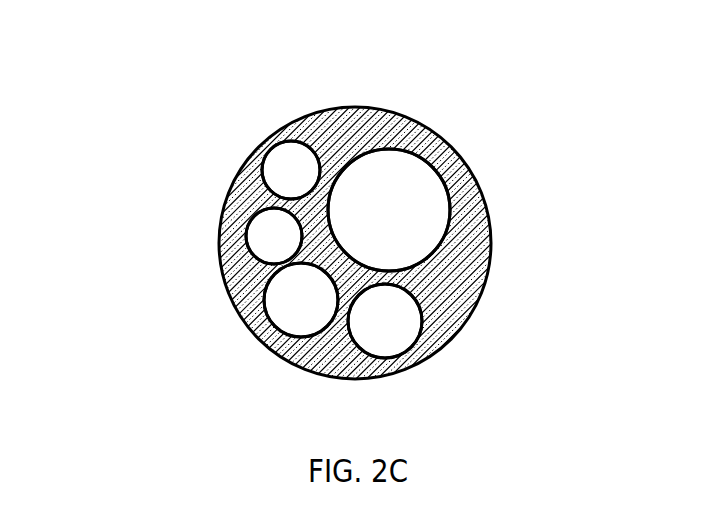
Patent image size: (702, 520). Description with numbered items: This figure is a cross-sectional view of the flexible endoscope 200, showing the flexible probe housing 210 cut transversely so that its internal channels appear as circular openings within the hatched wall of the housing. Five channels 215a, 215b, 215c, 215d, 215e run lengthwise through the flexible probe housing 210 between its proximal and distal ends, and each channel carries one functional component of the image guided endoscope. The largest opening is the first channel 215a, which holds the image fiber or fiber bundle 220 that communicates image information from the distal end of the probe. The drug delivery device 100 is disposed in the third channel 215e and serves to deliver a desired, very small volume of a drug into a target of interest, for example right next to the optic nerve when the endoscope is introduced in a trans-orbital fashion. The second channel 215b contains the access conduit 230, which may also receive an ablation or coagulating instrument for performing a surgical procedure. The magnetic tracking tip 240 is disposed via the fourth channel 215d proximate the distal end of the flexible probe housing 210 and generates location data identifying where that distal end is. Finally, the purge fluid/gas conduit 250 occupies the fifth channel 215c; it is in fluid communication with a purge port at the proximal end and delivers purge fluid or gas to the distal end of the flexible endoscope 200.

The flexible endoscope 200 is at (367, 32).
The flexible probe housing 210 is at (320, 108).
The drug delivery device 100 is at (290, 170).
The image fiber or fiber bundle 220 is at (405, 177).
The access conduit 230 is at (390, 342).
The magnetic tracking tip 240 is at (265, 297).
The purge fluid/gas conduit 250 is at (260, 243).
The first channel 215a is at (437, 238).
The second channel 215b is at (374, 332).
The fifth channel 215c is at (263, 251).
The fourth channel 215d is at (292, 330).
The third channel 215e is at (287, 151).